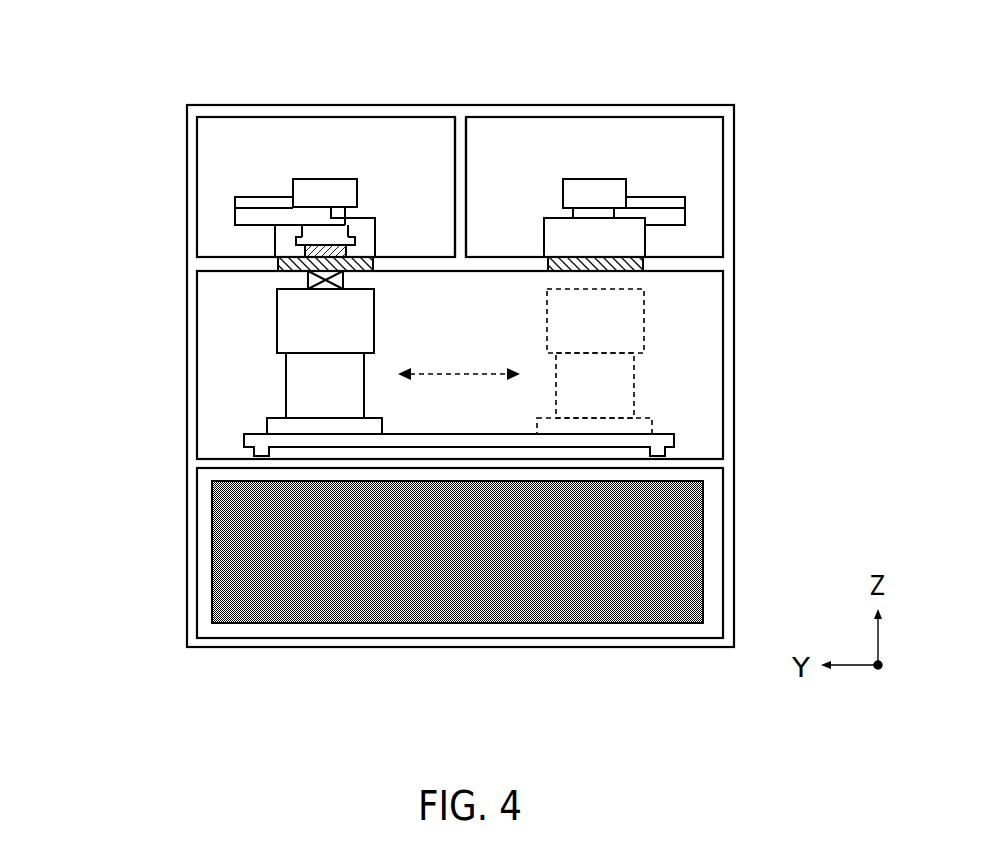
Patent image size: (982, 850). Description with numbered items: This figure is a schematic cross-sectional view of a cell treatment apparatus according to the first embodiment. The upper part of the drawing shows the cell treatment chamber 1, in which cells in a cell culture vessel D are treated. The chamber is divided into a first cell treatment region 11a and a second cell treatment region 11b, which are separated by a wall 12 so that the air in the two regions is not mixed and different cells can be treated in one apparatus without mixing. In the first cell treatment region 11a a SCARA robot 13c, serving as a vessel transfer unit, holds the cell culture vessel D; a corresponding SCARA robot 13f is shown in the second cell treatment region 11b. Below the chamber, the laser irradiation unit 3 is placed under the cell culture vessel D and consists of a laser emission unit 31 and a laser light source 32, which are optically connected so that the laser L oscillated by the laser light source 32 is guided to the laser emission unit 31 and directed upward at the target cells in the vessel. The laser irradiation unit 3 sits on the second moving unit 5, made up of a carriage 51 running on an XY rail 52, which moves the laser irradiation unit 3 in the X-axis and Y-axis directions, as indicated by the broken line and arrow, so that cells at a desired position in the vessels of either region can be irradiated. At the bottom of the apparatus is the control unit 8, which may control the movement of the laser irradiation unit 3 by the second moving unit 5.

The cell treatment chamber 1 is at (460, 325).
The first cell treatment region 11a is at (432, 130).
The second cell treatment region 11b is at (510, 130).
The wall 12 is at (467, 130).
The SCARA robot 13c is at (327, 195).
The SCARA robot 13f is at (593, 193).
The cell culture vessel D is at (302, 249).
The laser L is at (343, 279).
The laser irradiation unit 3 is at (220, 353).
The laser emission unit 31 is at (297, 325).
The laser light source 32 is at (305, 376).
The second moving unit 5 is at (356, 448).
The carriage 51 is at (288, 427).
The XY rail 52 is at (255, 442).
The control unit 8 is at (468, 575).